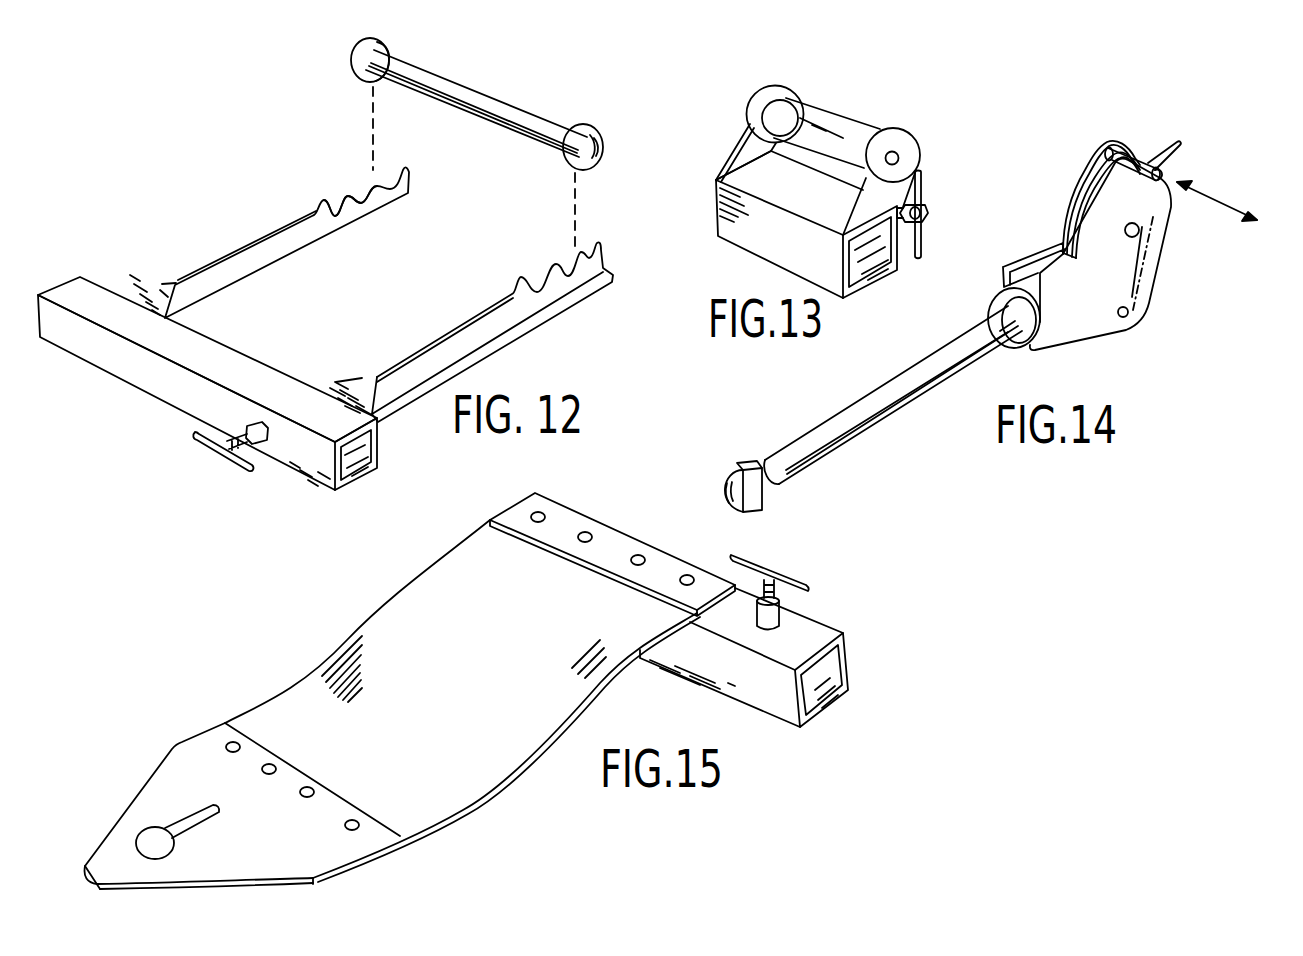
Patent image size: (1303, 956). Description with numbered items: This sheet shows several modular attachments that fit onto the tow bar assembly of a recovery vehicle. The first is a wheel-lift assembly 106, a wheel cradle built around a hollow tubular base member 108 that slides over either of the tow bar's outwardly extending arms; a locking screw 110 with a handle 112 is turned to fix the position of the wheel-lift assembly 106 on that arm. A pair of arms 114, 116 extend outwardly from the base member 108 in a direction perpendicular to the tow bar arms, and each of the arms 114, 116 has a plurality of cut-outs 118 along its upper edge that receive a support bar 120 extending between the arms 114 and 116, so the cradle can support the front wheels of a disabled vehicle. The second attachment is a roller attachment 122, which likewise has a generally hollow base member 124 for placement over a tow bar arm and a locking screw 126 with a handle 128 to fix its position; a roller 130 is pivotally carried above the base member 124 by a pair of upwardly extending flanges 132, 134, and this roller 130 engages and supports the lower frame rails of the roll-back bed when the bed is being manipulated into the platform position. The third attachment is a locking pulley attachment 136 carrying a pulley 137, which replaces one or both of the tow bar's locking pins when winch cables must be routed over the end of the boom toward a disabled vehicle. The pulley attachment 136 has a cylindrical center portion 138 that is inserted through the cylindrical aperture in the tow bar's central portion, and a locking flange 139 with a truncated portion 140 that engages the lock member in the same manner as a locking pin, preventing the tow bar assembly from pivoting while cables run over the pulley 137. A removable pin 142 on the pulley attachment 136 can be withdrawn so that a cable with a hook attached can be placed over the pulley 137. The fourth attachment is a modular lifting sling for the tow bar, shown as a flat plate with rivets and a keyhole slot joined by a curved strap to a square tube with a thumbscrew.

In FIG. 12, the wheel-lift assembly 106 is at (128, 392).
In FIG. 12, the hollow tubular base member 108 is at (176, 412).
In FIG. 12, the locking screw 110 is at (255, 444).
In FIG. 12, the handle 112 is at (228, 467).
In FIG. 12, the arm 114 is at (239, 247).
In FIG. 12, the arm 116 is at (414, 352).
In FIG. 12, the cut-outs 118 is at (384, 187).
In FIG. 12, the support bar 120 is at (448, 75).
In FIG. 13, the roller attachment 122 is at (723, 165).
In FIG. 13, the hollow base member 124 is at (740, 247).
In FIG. 13, the locking screw 126 is at (897, 232).
In FIG. 13, the handle 128 is at (924, 181).
In FIG. 13, the roller 130 is at (827, 124).
In FIG. 13, the upwardly extending flange 132 is at (747, 127).
In FIG. 13, the upwardly extending flange 134 is at (891, 178).
In FIG. 14, the locking pulley attachment 136 is at (1124, 347).
In FIG. 14, the pulley 137 is at (1066, 205).
In FIG. 14, the cylindrical center portion 138 is at (847, 433).
In FIG. 14, the locking flange 139 is at (723, 477).
In FIG. 14, the truncated portion 140 is at (750, 495).
In FIG. 14, the removable pin 142 is at (1163, 170).